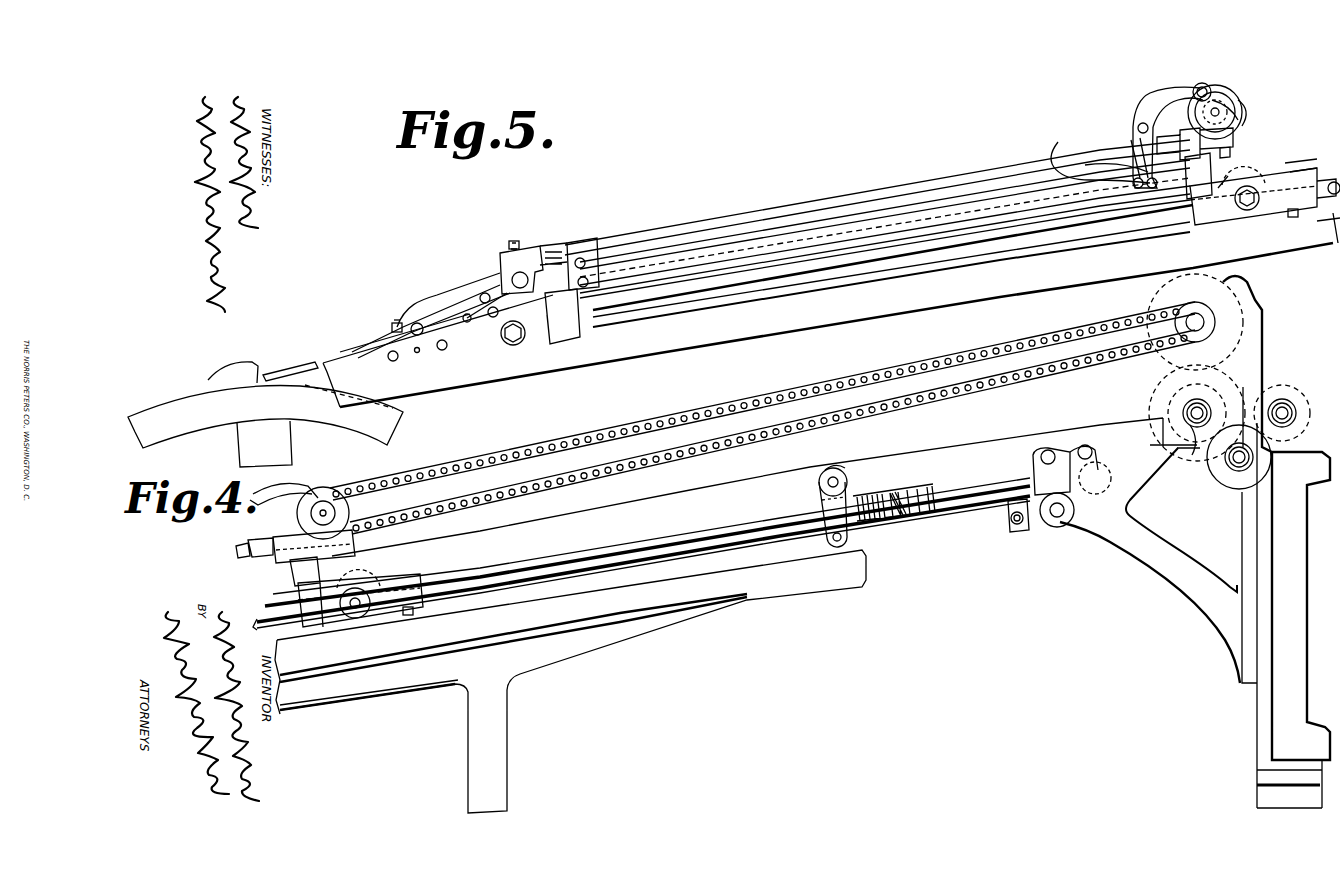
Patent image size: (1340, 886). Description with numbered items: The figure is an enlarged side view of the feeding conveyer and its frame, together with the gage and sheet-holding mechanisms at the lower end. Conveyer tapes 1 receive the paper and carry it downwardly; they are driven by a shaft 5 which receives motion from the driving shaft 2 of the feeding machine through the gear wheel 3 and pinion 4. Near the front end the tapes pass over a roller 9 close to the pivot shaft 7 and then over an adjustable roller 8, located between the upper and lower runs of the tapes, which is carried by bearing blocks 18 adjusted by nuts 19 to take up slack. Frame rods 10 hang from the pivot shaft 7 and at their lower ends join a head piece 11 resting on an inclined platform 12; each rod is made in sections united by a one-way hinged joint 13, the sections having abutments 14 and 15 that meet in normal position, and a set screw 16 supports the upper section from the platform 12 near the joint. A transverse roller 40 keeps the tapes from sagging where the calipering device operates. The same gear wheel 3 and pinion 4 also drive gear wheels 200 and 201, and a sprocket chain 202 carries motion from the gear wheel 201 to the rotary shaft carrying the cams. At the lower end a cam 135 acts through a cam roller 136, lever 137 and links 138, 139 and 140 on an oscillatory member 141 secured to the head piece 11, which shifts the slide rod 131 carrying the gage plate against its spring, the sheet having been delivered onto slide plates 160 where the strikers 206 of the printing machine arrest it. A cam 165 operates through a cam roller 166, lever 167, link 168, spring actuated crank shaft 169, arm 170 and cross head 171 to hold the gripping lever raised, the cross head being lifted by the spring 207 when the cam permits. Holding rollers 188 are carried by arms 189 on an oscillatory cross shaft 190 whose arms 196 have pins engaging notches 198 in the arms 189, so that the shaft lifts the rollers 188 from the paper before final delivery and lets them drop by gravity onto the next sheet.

In FIG. 5, the conveyer tapes 1 is at (1300, 160).
In FIG. 4, the conveyer tapes 1 is at (1125, 458).
In FIG. 4, the driving shaft 2 is at (1288, 407).
In FIG. 4, the gear wheel 3 is at (1230, 488).
In FIG. 4, the pinion 4 is at (1195, 455).
In FIG. 4, the shaft 5 is at (1203, 406).
In FIG. 4, the pivot shaft 7 is at (1057, 515).
In FIG. 4, the adjustable roller 8 is at (820, 484).
In FIG. 4, the roller 9 is at (1100, 485).
In FIG. 5, the frame rods 10 is at (990, 247).
In FIG. 4, the frame rods 10 is at (947, 500).
In FIG. 5, the head piece 11 is at (494, 336).
In FIG. 5, the inclined platform 12 is at (840, 306).
In FIG. 4, the inclined platform 12 is at (570, 681).
In FIG. 5, the one-way hinged joint 13 is at (1253, 196).
In FIG. 4, the one-way hinged joint 13 is at (360, 600).
In FIG. 5, the abutment 14 is at (1246, 172).
In FIG. 4, the abutment 14 is at (372, 580).
In FIG. 5, the abutment 15 is at (1236, 180).
In FIG. 4, the abutment 15 is at (272, 580).
In FIG. 5, the set screw 16 is at (1293, 218).
In FIG. 4, the set screw 16 is at (410, 615).
In FIG. 4, the bearing blocks 18 is at (835, 507).
In FIG. 4, the nuts 19 is at (888, 515).
In FIG. 5, the transverse roller 40 is at (1100, 157).
In FIG. 5, the slide rod 131 is at (418, 353).
In FIG. 5, the cam 135 is at (1242, 103).
In FIG. 5, the cam roller 136 is at (1190, 68).
In FIG. 5, the lever 137 is at (1133, 143).
In FIG. 5, the link 138 is at (882, 248).
In FIG. 5, the link 139 is at (480, 322).
In FIG. 5, the link 140 is at (462, 325).
In FIG. 5, the oscillatory member 141 is at (388, 356).
In FIG. 5, the slide plates 160 is at (300, 362).
In FIG. 5, the cam 165 is at (1235, 120).
In FIG. 5, the cam roller 166 is at (1212, 88).
In FIG. 5, the lever 167 is at (1170, 92).
In FIG. 5, the link 168 is at (762, 260).
In FIG. 5, the crank shaft 169 is at (600, 250).
In FIG. 5, the arm 170 is at (463, 285).
In FIG. 5, the cross head 171 is at (394, 322).
In FIG. 5, the rollers 188 is at (433, 315).
In FIG. 5, the arms 189 is at (450, 288).
In FIG. 5, the oscillatory cross shaft 190 is at (525, 272).
In FIG. 5, the arms 196 is at (498, 262).
In FIG. 5, the notches 198 is at (484, 298).
In FIG. 4, the gear wheel 200 is at (1237, 393).
In FIG. 4, the gear wheel 201 is at (1250, 300).
In FIG. 4, the sprocket chain 202 is at (855, 372).
In FIG. 5, the strikers 206 is at (248, 362).
In FIG. 5, the spring 207 is at (577, 260).